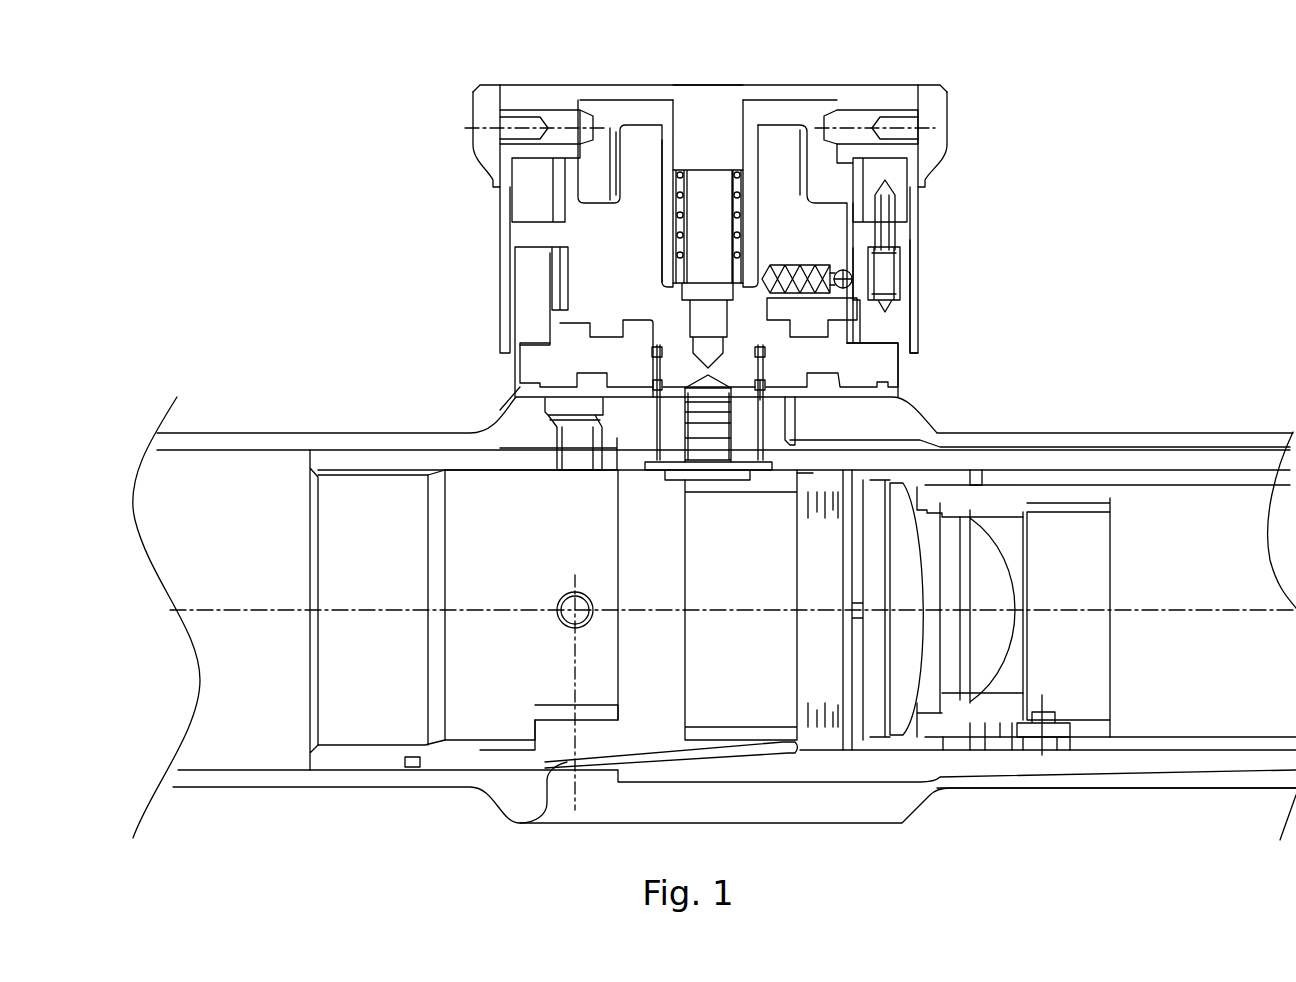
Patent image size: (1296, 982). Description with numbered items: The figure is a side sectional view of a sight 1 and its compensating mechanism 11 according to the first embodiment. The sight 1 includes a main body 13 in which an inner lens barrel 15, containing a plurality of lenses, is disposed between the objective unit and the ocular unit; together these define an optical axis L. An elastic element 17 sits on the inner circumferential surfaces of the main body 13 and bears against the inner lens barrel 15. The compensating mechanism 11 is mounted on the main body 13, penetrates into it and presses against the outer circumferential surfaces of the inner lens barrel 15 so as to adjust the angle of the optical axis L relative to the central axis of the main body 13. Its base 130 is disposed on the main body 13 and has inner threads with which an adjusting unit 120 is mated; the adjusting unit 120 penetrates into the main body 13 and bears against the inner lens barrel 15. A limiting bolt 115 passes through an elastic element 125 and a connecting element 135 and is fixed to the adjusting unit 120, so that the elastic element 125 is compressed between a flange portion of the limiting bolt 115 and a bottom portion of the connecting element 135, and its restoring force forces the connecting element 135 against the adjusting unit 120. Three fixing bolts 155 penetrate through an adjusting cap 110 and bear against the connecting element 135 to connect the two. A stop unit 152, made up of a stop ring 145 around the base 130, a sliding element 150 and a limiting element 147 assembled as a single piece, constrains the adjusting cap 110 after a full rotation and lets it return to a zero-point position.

The sight 1 is at (52, 46).
The compensating mechanism 11 is at (398, 76).
The main body 13 is at (883, 427).
The inner lens barrel 15 is at (903, 745).
The elastic element 17 is at (565, 768).
The adjusting cap 110 is at (515, 93).
The limiting bolt 115 is at (705, 148).
The adjusting unit 120 is at (673, 322).
The elastic element 125 is at (750, 147).
The base 130 is at (548, 372).
The connecting element 135 is at (785, 117).
The stop ring 145 is at (878, 327).
The limiting element 147 is at (912, 235).
The sliding element 150 is at (907, 255).
The stop unit 152 is at (1050, 208).
The fixing bolts 155 is at (905, 113).
The optical axis L is at (223, 610).